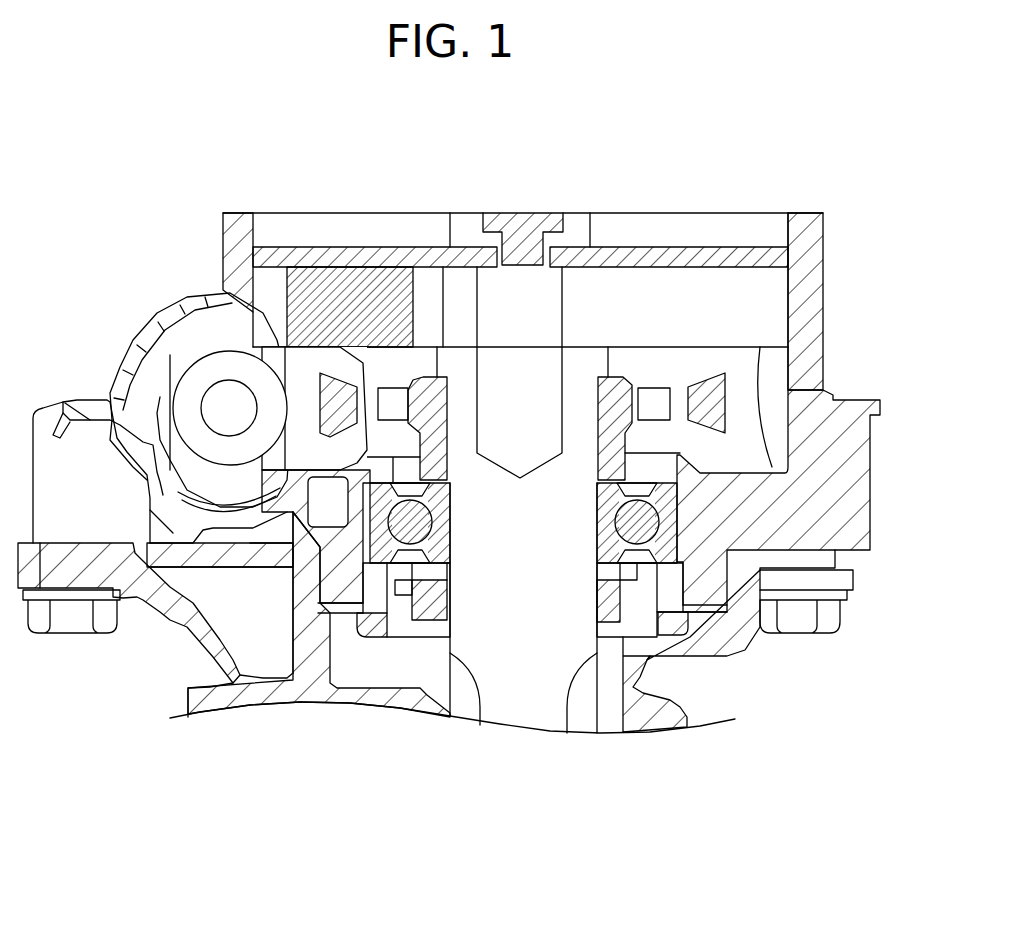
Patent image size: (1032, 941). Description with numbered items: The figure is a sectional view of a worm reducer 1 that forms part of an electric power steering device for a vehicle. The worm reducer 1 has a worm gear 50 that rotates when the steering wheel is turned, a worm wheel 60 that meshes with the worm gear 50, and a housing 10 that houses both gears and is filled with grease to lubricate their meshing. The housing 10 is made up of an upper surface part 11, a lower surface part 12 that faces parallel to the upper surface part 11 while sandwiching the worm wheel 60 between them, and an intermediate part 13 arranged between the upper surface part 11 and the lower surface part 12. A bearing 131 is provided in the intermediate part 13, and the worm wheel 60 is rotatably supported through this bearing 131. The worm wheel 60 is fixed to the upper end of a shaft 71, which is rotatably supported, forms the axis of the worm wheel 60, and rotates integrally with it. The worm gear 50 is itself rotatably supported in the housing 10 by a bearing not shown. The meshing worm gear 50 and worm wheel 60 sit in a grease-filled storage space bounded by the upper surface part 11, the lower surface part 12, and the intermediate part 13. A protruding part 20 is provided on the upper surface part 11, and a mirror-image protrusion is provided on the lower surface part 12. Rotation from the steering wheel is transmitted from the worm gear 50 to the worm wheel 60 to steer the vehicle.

The worm reducer 1 is at (217, 160).
The housing 10 is at (830, 242).
The upper surface part 11 is at (671, 246).
The lower surface part 12 is at (350, 540).
The intermediate part 13 is at (813, 307).
The protruding part 20 is at (347, 278).
The worm gear 50 is at (191, 350).
The worm wheel 60 is at (779, 363).
The shaft 71 is at (523, 712).
The bearing 131 is at (680, 526).